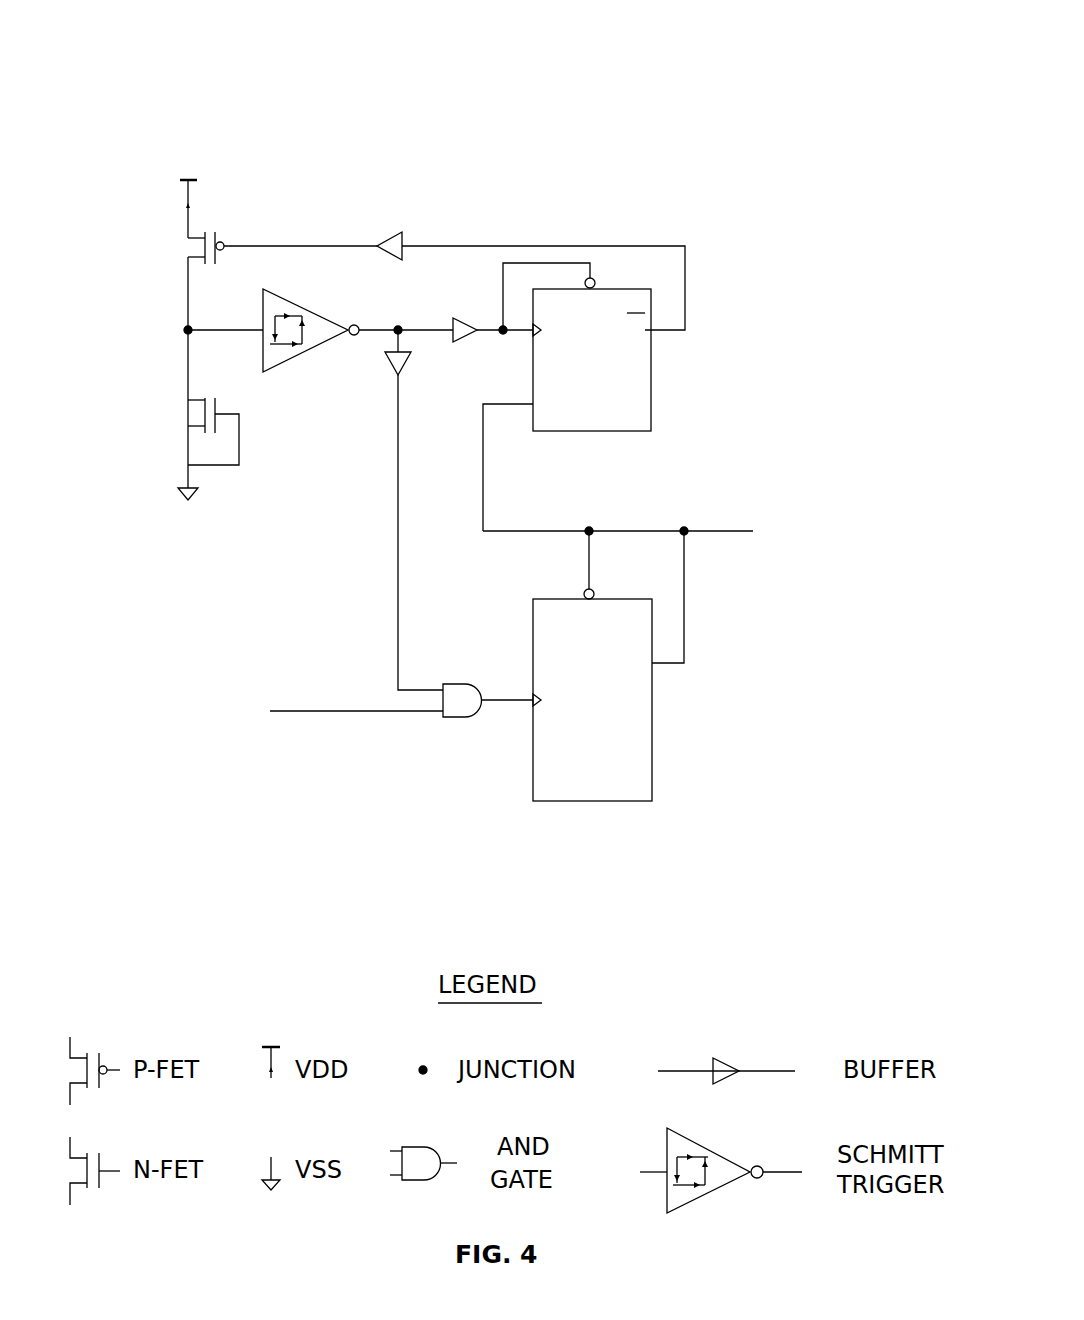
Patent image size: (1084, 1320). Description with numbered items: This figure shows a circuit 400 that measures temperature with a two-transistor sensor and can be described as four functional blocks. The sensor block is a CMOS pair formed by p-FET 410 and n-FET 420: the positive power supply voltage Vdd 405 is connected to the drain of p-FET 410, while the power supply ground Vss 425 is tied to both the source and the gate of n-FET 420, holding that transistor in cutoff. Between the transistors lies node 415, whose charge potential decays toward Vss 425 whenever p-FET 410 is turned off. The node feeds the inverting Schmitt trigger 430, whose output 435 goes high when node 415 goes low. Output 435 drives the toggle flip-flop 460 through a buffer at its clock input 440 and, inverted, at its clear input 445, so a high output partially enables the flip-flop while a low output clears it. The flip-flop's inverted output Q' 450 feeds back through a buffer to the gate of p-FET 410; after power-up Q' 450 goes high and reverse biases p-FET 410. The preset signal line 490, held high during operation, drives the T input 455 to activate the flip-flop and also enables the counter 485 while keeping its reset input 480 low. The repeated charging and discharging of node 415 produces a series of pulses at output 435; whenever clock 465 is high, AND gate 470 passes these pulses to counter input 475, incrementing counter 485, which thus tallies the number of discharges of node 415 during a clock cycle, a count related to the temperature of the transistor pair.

The circuit 400 is at (182, 73).
The positive power supply voltage Vdd 405 is at (188, 179).
The p-FET 410 is at (198, 257).
The node 415 is at (188, 329).
The n-FET 420 is at (198, 420).
The power supply ground Vss 425 is at (188, 484).
The inverting Schmitt trigger 430 is at (287, 365).
The output 435 is at (413, 329).
The clock input 440 is at (530, 333).
The clear input 445 is at (597, 282).
The output Q' 450 is at (645, 335).
The T input 455 is at (538, 407).
The toggle flip-flop 460 is at (651, 397).
The clock 465 is at (230, 702).
The AND gate 470 is at (465, 680).
The counter input 475 is at (537, 703).
The reset input 480 is at (595, 591).
The counter 485 is at (652, 742).
The preset signal line 490 is at (735, 532).